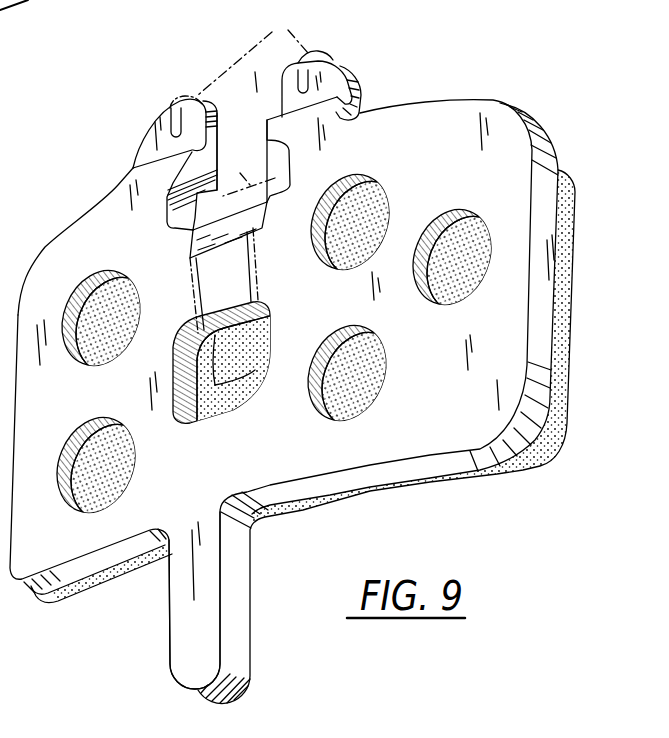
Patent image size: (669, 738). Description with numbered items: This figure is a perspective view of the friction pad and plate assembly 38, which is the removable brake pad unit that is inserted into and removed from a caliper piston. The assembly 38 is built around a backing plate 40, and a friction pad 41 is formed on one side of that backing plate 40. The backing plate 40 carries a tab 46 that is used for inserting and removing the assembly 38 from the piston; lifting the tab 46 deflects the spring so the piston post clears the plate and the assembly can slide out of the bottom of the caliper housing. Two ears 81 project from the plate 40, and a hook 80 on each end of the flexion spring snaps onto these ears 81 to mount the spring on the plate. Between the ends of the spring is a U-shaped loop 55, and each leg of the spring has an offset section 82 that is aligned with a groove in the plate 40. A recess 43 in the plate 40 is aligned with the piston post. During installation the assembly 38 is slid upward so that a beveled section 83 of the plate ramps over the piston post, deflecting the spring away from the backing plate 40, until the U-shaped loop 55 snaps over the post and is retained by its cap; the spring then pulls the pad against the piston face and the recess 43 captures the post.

The friction pad and plate assembly 38 is at (316, 356).
The backing plate 40 is at (430, 100).
The friction pad 41 is at (574, 228).
The recess 43 is at (280, 347).
The tab 46 is at (187, 657).
The U-shaped loop 55 is at (247, 373).
The hook 80 is at (239, 170).
The ears 81 is at (147, 137).
The offset section 82 is at (242, 157).
The beveled section 83 is at (192, 232).